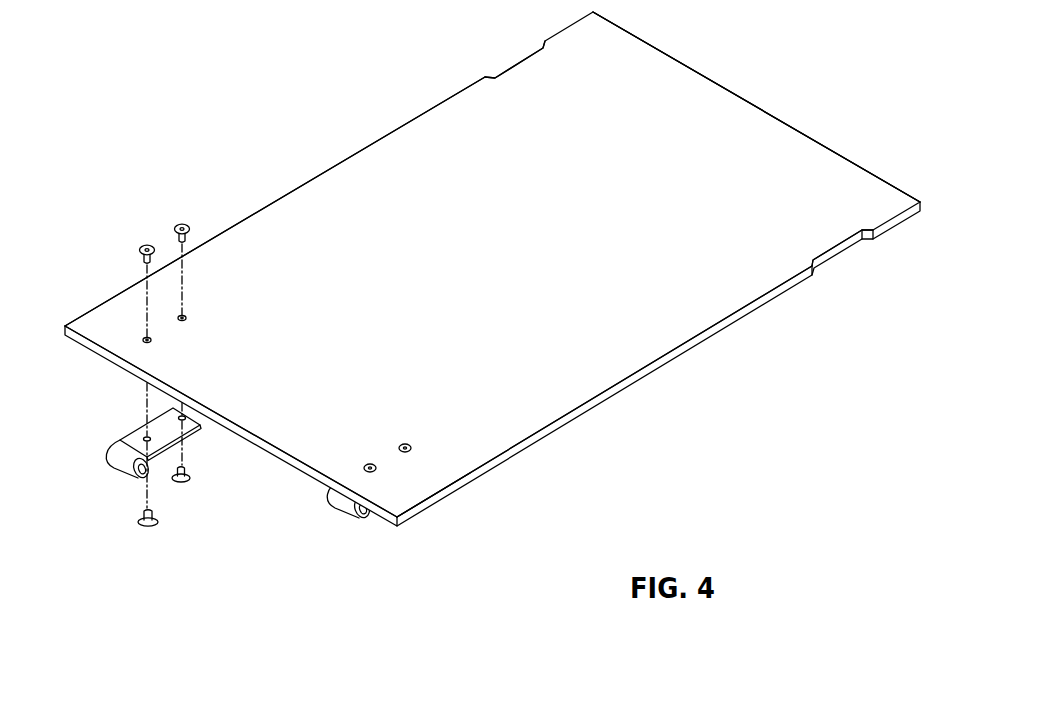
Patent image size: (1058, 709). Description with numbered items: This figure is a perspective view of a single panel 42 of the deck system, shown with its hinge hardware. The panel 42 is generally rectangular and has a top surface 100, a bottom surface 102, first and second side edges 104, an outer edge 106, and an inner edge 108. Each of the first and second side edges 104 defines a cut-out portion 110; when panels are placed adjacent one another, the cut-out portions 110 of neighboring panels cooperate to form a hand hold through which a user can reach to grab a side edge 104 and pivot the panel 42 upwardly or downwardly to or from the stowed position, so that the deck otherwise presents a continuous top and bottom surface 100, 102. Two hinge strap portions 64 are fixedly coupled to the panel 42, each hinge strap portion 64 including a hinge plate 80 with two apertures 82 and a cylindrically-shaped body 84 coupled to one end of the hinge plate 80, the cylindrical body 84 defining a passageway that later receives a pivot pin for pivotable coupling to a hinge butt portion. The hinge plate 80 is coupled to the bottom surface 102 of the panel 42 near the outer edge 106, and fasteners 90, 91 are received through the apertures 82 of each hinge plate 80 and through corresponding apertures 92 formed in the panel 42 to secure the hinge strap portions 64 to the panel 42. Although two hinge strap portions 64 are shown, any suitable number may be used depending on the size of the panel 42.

The panel 42 is at (245, 62).
The hinge strap portion 64 is at (97, 441).
The hinge plate 80 is at (139, 436).
The apertures 82 is at (185, 417).
The cylindrically-shaped body 84 is at (118, 463).
The fasteners 90 is at (199, 207).
The fasteners 91 is at (151, 536).
The apertures 92 is at (184, 316).
The top surface 100 is at (533, 274).
The bottom surface 102 is at (455, 496).
The first and second side edges 104 is at (358, 150).
The outer edge 106 is at (283, 461).
The inner edge 108 is at (784, 118).
The cut-out portion 110 is at (511, 60).